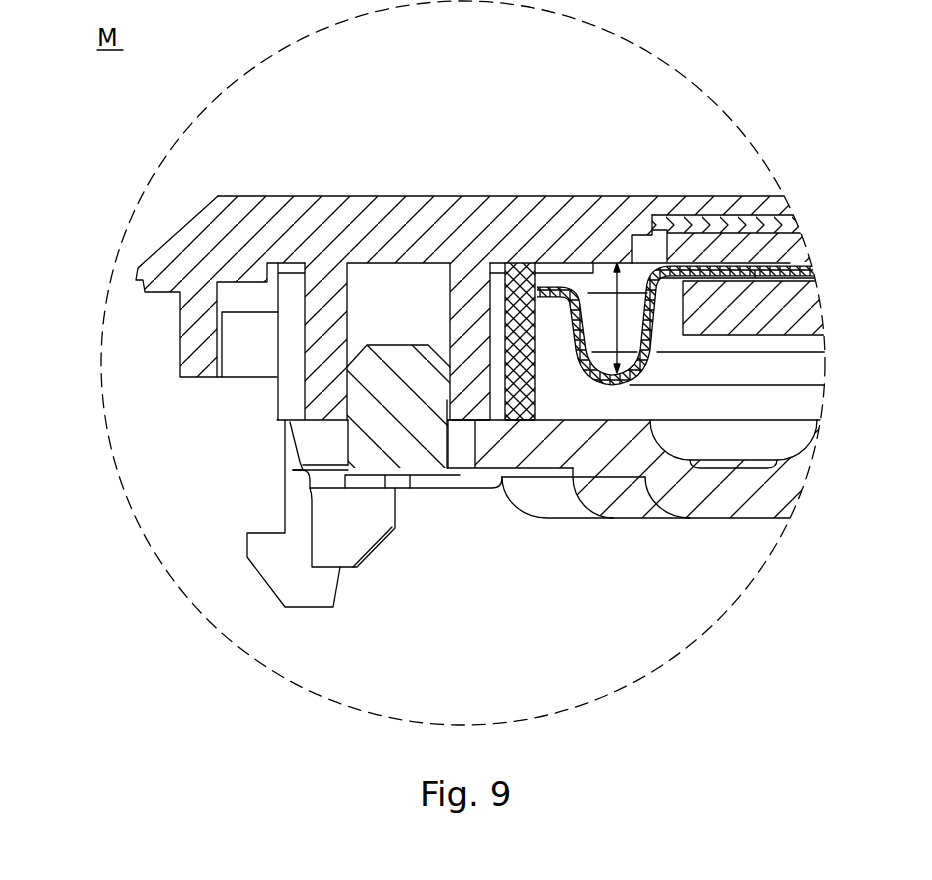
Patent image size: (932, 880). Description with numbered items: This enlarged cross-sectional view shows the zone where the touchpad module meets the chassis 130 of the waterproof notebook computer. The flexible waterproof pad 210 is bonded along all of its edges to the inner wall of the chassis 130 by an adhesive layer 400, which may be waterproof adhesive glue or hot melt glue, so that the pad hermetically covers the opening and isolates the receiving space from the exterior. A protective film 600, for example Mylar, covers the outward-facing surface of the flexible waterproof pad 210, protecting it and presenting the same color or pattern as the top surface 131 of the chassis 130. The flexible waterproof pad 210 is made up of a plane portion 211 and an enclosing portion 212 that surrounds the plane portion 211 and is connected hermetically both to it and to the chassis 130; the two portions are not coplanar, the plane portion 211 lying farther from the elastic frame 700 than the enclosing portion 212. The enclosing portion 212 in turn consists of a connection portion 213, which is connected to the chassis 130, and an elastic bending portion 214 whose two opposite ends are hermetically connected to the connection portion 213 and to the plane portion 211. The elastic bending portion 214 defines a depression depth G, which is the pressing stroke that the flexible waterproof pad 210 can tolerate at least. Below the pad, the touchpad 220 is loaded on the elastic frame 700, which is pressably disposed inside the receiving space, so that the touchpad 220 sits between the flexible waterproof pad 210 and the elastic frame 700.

The chassis 130 is at (268, 234).
The top surface 131 is at (390, 196).
The adhesive layer 400 is at (528, 262).
The flexible waterproof pad 210 is at (692, 103).
The plane portion 211 is at (688, 244).
The enclosing portion 212 is at (638, 150).
The connection portion 213 is at (557, 280).
The elastic bending portion 214 is at (637, 372).
The protective film 600 is at (787, 227).
The touchpad 220 is at (800, 310).
The elastic frame 700 is at (728, 508).
The depression depth G is at (604, 340).